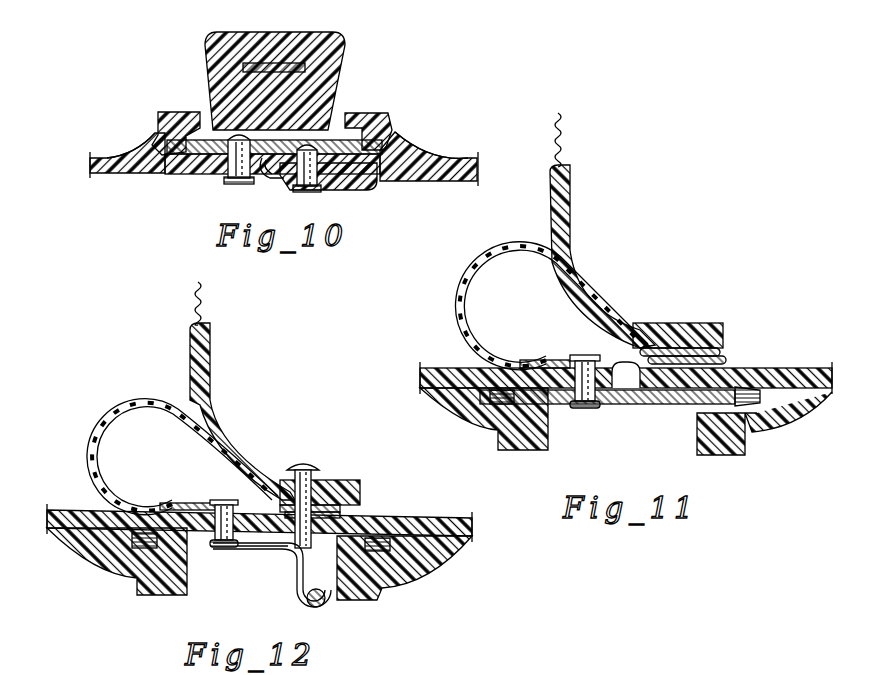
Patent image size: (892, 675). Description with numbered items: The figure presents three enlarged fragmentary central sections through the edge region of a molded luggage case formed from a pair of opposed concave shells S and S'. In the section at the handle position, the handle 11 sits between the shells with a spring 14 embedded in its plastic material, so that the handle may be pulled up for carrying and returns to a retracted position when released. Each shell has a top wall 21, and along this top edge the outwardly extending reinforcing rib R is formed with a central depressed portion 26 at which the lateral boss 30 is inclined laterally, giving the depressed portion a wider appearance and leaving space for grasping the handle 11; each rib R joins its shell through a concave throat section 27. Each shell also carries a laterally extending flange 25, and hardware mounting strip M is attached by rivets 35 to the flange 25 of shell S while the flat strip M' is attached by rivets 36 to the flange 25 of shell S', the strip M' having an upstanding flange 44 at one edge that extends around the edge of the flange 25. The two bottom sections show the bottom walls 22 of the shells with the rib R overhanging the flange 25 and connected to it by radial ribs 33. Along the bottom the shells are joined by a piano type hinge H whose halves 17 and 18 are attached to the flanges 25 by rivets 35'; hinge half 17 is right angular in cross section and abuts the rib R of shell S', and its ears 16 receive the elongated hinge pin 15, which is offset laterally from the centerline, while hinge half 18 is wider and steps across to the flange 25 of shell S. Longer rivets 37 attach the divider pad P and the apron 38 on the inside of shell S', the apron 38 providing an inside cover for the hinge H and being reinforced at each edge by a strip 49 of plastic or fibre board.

In FIG. 10, the handle 11 is at (347, 55).
In FIG. 10, the spring 14 is at (263, 63).
In FIG. 12, the hinge pin 15 is at (312, 604).
In FIG. 12, the ears 16 is at (325, 612).
In FIG. 12, the hinge half 17 is at (308, 560).
In FIG. 12, the hinge half 18 is at (259, 570).
In FIG. 10, the top wall 21 is at (100, 158).
In FIG. 11, the bottom wall 22 is at (432, 394).
In FIG. 12, the bottom wall 22 is at (462, 520).
In FIG. 10, the laterally extending flange 25 is at (192, 175).
In FIG. 11, the laterally extending flange 25 is at (548, 367).
In FIG. 12, the laterally extending flange 25 is at (190, 511).
In FIG. 10, the central depressed portion 26 is at (168, 112).
In FIG. 10, the throat section 27 is at (155, 133).
In FIG. 12, the throat section 27 is at (125, 546).
In FIG. 10, the lateral boss 30 is at (160, 113).
In FIG. 12, the radial ribs 33 is at (142, 556).
In FIG. 10, the rivets 35 is at (226, 176).
In FIG. 12, the rivets 35' is at (216, 547).
In FIG. 10, the rivets 36 is at (310, 193).
In FIG. 11, the rivets 36 is at (585, 410).
In FIG. 12, the longer rivets 37 is at (306, 472).
In FIG. 11, the apron 38 is at (466, 258).
In FIG. 12, the apron 38 is at (121, 395).
In FIG. 10, the upstanding flange 44 is at (268, 172).
In FIG. 11, the strip 49 is at (530, 359).
In FIG. 12, the strip 49 is at (176, 504).
In FIG. 10, the concave shell S is at (67, 151).
In FIG. 11, the concave shell S is at (398, 363).
In FIG. 12, the concave shell S is at (38, 506).
In FIG. 10, the concave shell S' is at (499, 163).
In FIG. 11, the concave shell S' is at (833, 362).
In FIG. 12, the concave shell S' is at (502, 532).
In FIG. 10, the hardware mounting strip M is at (197, 103).
In FIG. 11, the hardware mounting strip M is at (620, 428).
In FIG. 10, the hardware mounting strip M' is at (338, 196).
In FIG. 11, the hardware mounting strip M' is at (603, 357).
In FIG. 11, the divider pad P is at (572, 222).
In FIG. 12, the divider pad P is at (213, 386).
In FIG. 11, the rib R is at (552, 448).
In FIG. 12, the rib R is at (140, 592).
In FIG. 12, the hinge H is at (297, 596).